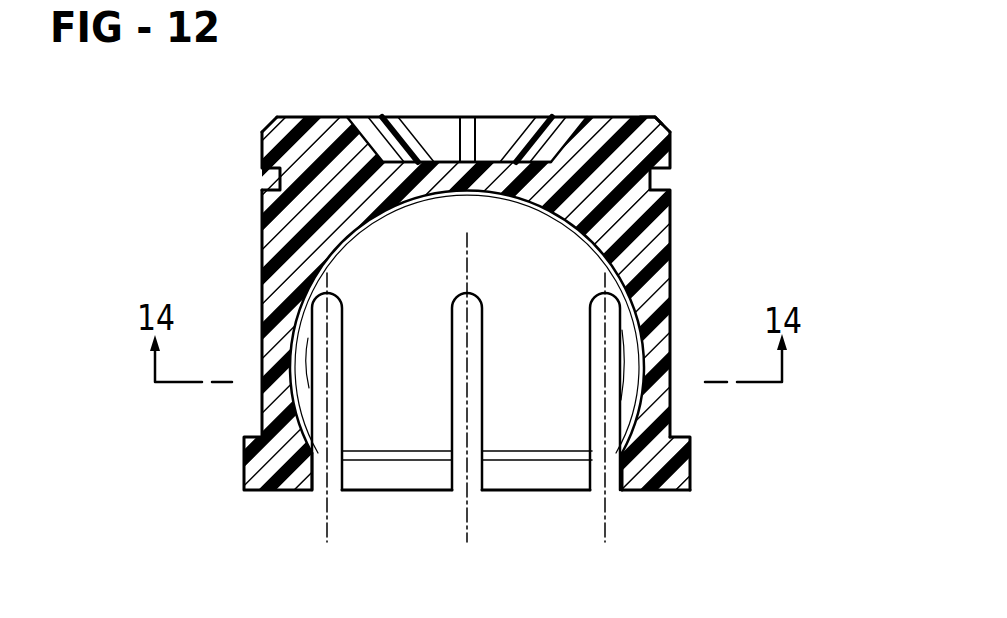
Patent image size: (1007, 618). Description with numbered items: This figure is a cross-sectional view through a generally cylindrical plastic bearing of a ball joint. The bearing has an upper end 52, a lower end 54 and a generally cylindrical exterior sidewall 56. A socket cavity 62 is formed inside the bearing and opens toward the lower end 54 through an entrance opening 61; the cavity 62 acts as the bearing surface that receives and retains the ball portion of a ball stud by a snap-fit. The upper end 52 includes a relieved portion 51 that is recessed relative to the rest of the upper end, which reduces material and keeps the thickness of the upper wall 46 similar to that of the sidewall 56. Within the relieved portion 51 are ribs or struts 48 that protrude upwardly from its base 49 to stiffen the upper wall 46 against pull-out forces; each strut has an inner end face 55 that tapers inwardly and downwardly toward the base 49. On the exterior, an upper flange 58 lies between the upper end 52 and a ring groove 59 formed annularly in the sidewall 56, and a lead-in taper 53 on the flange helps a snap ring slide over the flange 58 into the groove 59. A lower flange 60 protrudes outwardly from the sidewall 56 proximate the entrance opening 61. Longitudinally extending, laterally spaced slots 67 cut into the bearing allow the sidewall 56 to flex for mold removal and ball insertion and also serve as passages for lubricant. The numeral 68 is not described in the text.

The upper wall 46 is at (447, 185).
The ribs or struts 48 is at (335, 117).
The base of relieved portion 49 is at (528, 162).
The relieved portion 51 is at (309, 100).
The upper end 52 is at (652, 118).
The lead-in taper 53 is at (663, 130).
The lower end 54 is at (677, 491).
The inner end face 55 is at (372, 158).
The exterior sidewall 56 is at (662, 352).
The upper flange 58 is at (670, 172).
The ring groove 59 is at (264, 176).
The lower flange 60 is at (690, 453).
The entrance opening 61 is at (535, 491).
The socket cavity 62 is at (548, 275).
The slots 67 is at (318, 483).
The base plate 68 is at (402, 457).